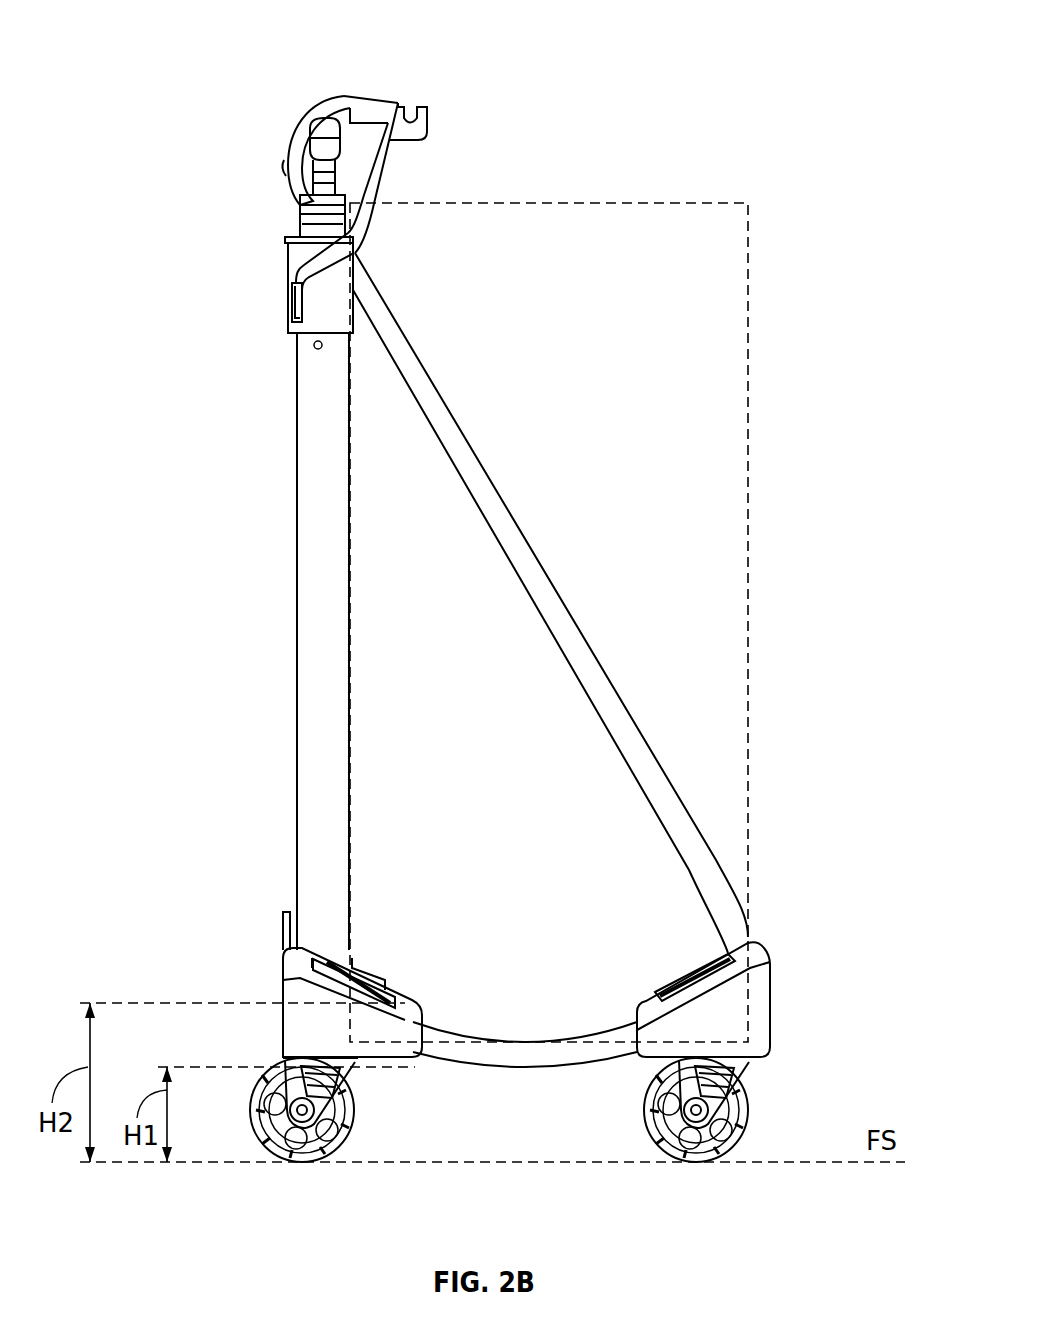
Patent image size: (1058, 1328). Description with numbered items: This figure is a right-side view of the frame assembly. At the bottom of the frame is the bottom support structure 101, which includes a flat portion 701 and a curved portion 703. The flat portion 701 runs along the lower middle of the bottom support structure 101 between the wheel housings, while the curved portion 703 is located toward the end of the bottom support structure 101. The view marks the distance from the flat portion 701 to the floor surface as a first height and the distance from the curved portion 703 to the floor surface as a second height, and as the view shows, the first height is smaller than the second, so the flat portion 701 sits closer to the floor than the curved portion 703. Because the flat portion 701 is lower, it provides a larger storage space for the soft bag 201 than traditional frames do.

The bottom support structure 101 is at (550, 1058).
The soft bag 201 is at (349, 518).
The flat portion 701 is at (526, 1035).
The curved portion 703 is at (383, 976).